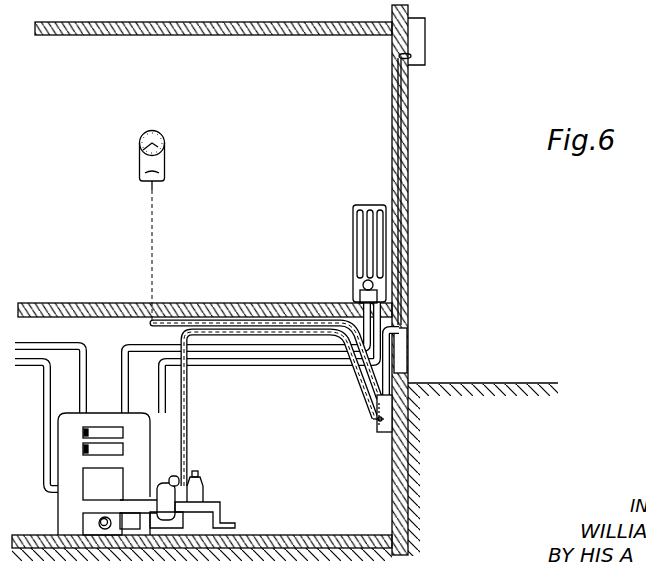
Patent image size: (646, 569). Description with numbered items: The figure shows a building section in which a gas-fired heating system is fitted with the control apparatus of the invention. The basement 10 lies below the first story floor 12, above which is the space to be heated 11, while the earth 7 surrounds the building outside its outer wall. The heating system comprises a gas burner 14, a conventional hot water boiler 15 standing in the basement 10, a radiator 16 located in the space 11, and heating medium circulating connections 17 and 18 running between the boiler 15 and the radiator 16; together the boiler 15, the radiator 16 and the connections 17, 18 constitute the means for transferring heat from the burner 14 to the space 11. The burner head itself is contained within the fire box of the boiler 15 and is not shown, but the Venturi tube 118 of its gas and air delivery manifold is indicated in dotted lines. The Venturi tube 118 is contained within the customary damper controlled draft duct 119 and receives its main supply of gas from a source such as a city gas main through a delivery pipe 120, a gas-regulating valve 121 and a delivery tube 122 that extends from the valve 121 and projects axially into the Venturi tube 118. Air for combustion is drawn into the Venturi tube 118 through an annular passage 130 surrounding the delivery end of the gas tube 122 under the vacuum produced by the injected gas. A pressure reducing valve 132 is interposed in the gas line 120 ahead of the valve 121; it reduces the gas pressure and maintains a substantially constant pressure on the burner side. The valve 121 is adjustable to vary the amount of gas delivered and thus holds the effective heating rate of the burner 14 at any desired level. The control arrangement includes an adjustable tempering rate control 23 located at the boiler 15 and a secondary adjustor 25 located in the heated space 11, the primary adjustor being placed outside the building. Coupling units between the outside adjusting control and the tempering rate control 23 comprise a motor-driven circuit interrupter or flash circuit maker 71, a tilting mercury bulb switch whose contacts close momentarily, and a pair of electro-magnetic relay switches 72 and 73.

The secondary adjustor 25 is at (170, 164).
The space to be heated 11 is at (263, 201).
The first story floor 12 is at (233, 303).
The radiator 16 is at (352, 217).
The heating medium circulating connection 17 is at (135, 341).
The heating medium circulating connection 18 is at (45, 376).
The hot water boiler 15 is at (100, 412).
The earth around the building 7 is at (482, 383).
The basement 10 is at (352, 486).
The motor-driven circuit interrupter or flash circuit maker 71 is at (370, 419).
The electro-magnetic relay switch 72 is at (372, 429).
The electro-magnetic relay switch 73 is at (384, 437).
The adjustable tempering rate control 23 is at (180, 480).
The pressure reducing valve 132 is at (205, 490).
The delivery pipe 120 is at (222, 521).
The Venturi tube 118 is at (105, 516).
The damper controlled draft duct 119 is at (85, 516).
The delivery tube 122 is at (128, 500).
The gas-regulating valve 121 is at (133, 513).
The burner 14 is at (78, 524).
The annular passage 130 is at (175, 528).